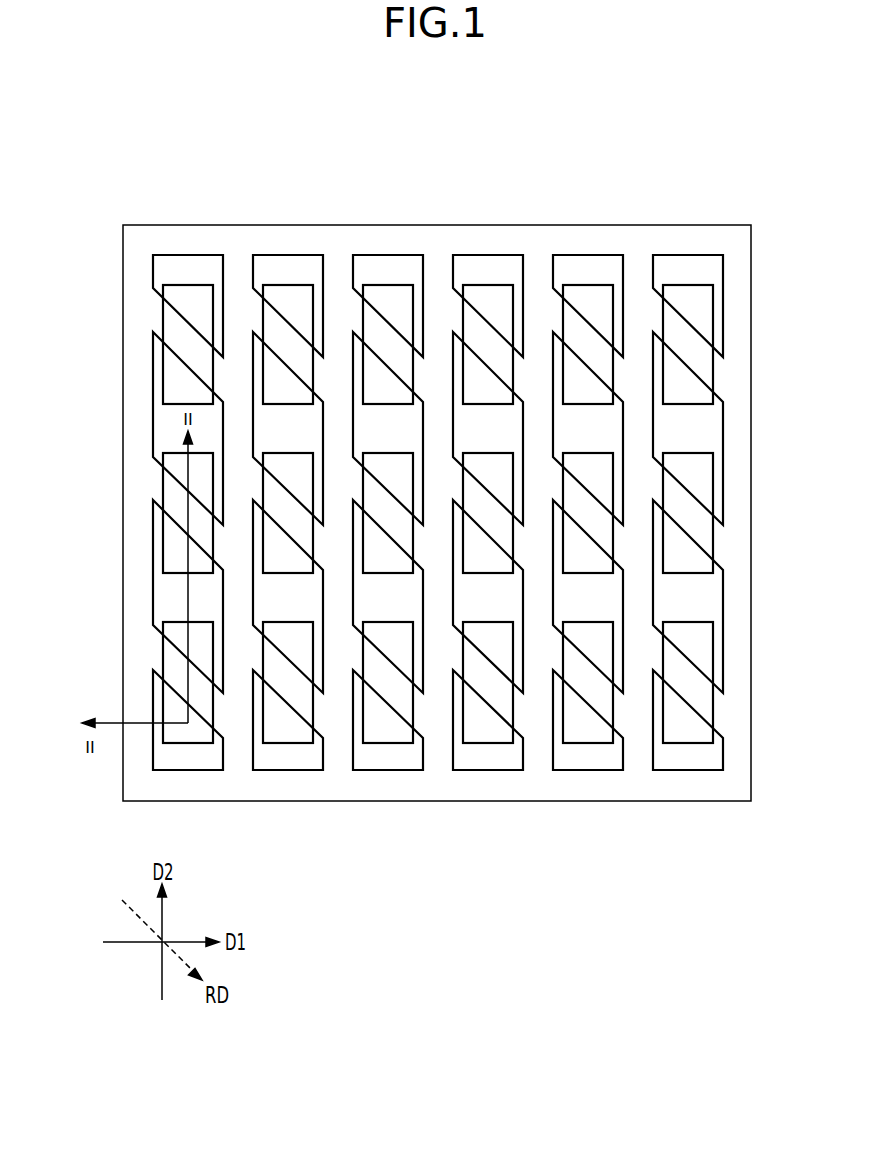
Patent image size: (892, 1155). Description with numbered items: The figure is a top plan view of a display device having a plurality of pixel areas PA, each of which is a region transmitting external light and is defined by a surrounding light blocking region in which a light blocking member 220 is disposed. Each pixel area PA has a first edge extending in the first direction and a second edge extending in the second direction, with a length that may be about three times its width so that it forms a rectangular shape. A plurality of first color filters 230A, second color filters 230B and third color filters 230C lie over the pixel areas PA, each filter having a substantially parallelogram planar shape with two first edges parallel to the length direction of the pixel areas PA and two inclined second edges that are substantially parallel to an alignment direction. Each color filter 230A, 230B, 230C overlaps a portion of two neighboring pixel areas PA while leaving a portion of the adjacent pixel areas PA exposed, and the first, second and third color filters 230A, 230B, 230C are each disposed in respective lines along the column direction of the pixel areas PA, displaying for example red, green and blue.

The light blocking member 220 is at (682, 788).
The first color filter 230A is at (186, 255).
The second color filter 230B is at (286, 255).
The third color filter 230C is at (386, 255).
The pixel area PA is at (713, 537).